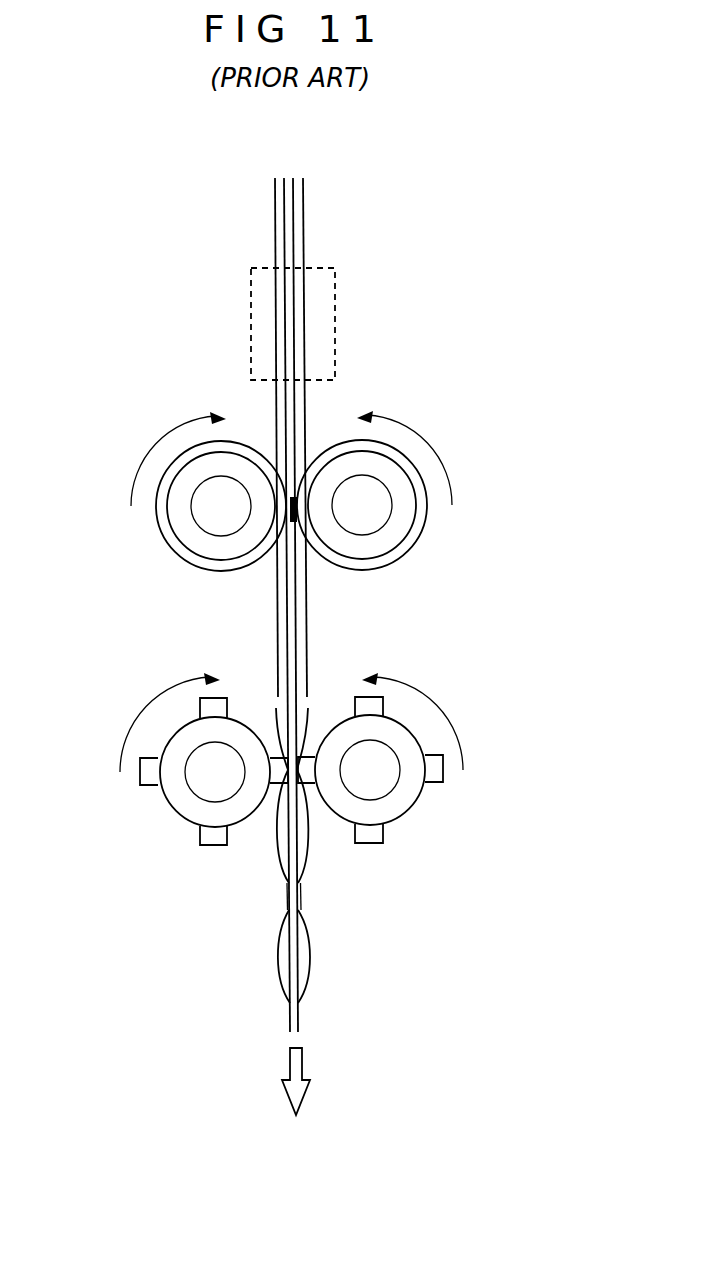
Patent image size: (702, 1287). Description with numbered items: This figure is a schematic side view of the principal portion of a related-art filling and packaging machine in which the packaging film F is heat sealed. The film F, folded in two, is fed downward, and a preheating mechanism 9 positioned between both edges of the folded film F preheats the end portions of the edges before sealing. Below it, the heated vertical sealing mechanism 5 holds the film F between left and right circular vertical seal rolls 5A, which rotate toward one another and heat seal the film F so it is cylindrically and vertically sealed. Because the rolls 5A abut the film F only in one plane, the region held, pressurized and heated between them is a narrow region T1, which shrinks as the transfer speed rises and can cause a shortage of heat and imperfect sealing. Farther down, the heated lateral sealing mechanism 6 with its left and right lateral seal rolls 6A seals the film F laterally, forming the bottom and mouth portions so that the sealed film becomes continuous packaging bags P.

The film F is at (281, 234).
The preheating mechanism 9 is at (320, 312).
The vertical sealing mechanism 5 is at (300, 474).
The vertical seal rolls 5A is at (167, 523).
The narrower region T1 is at (297, 512).
The lateral sealing mechanism 6 is at (307, 770).
The lateral seal rolls 6A is at (150, 778).
The packaging bag P is at (328, 946).